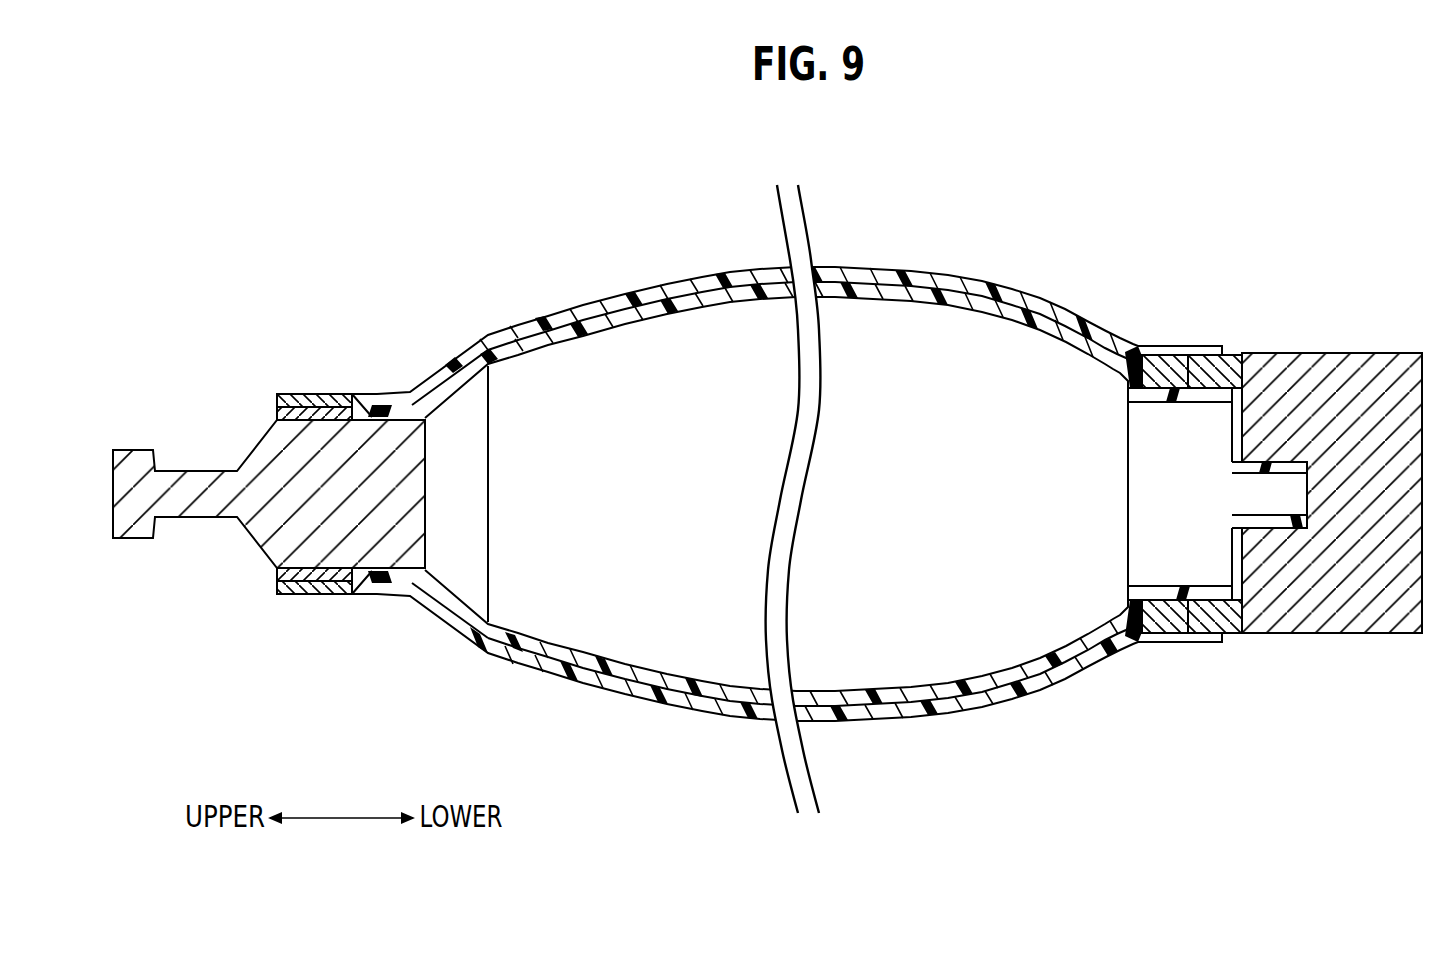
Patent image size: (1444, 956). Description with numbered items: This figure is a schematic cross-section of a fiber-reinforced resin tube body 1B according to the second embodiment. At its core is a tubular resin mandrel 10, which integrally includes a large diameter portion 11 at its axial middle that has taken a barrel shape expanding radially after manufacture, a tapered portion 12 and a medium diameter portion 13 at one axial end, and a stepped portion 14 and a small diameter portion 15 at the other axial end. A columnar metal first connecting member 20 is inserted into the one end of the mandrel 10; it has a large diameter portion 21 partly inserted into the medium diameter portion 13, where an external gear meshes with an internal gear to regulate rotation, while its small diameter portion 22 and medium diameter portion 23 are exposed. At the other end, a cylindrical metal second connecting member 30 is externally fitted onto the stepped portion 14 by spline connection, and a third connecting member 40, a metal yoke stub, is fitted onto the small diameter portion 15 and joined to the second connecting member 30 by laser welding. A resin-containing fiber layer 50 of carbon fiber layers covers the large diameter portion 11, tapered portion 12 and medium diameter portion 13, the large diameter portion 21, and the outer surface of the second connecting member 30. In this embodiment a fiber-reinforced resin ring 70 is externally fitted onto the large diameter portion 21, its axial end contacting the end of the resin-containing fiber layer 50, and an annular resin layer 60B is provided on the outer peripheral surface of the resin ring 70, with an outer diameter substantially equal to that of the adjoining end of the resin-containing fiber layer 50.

The tube body 1B is at (1264, 199).
The mandrel 10 is at (1052, 330).
The large diameter portion 11 is at (1053, 660).
The tapered portion 12 is at (452, 627).
The medium diameter portion 13 is at (398, 580).
The stepped portion 14 is at (1206, 600).
The small diameter portion 15 is at (1282, 528).
The first connecting member 20 is at (269, 417).
The large diameter portion 21 is at (331, 440).
The small diameter portion 22 is at (197, 485).
The medium diameter portion 23 is at (138, 465).
The second connecting member 30 is at (1192, 342).
The third connecting member 40 is at (1312, 360).
The resin-containing fiber layer 50 is at (937, 285).
The resin layer 60B is at (312, 594).
The resin ring 70 is at (278, 578).